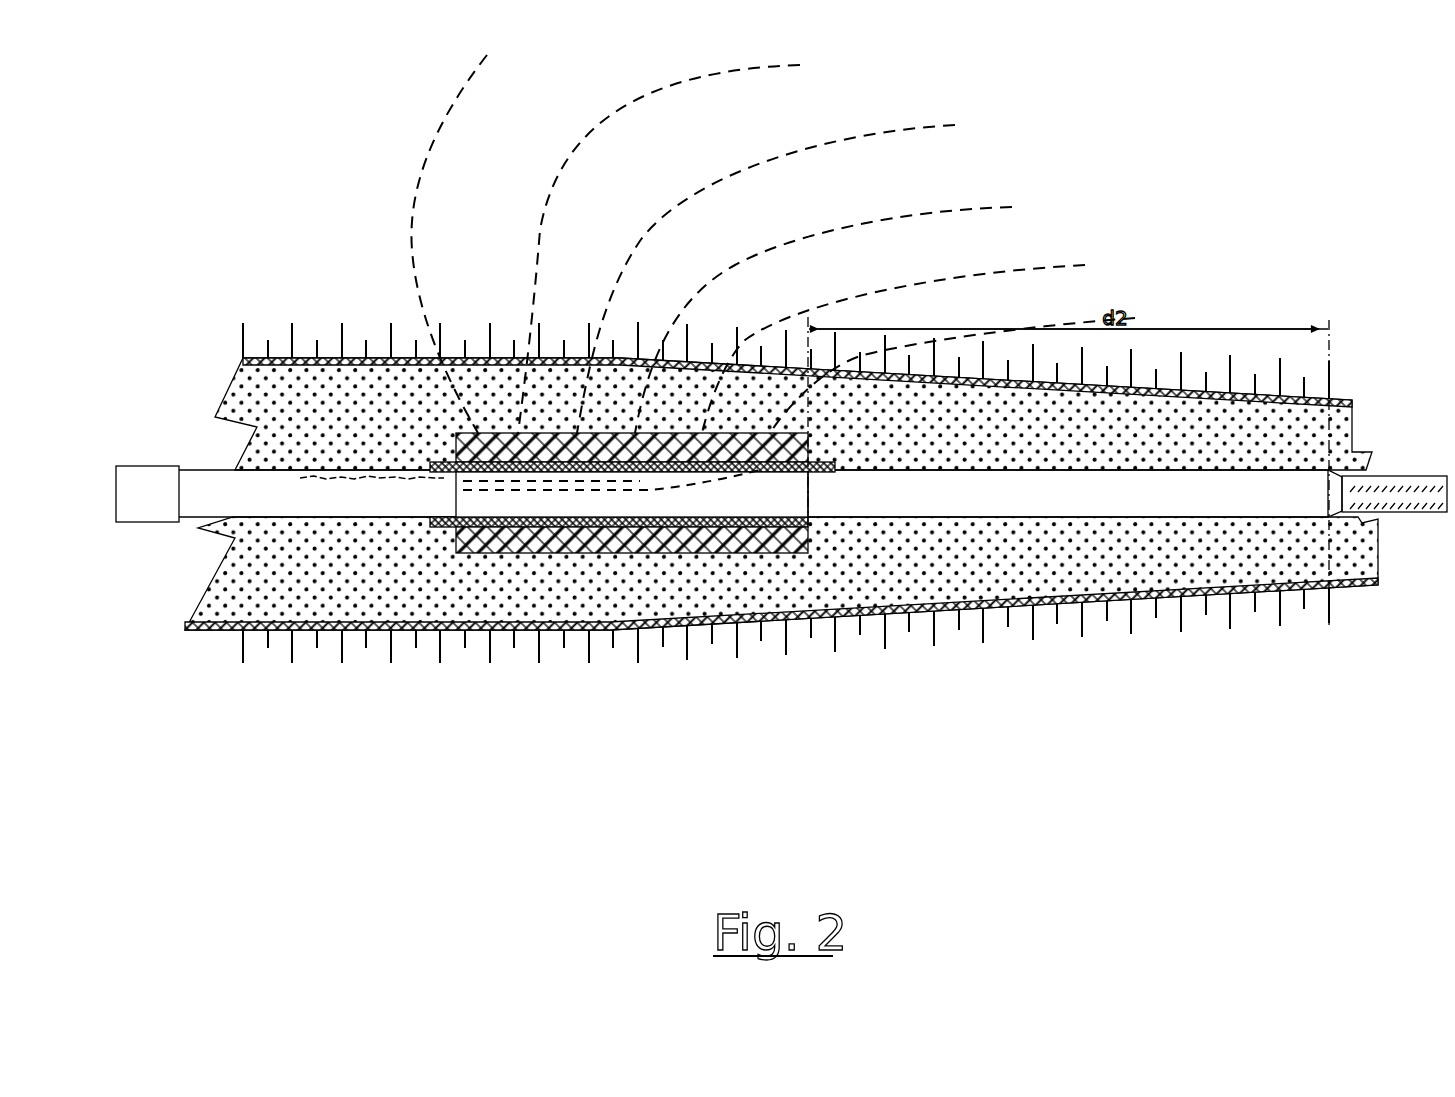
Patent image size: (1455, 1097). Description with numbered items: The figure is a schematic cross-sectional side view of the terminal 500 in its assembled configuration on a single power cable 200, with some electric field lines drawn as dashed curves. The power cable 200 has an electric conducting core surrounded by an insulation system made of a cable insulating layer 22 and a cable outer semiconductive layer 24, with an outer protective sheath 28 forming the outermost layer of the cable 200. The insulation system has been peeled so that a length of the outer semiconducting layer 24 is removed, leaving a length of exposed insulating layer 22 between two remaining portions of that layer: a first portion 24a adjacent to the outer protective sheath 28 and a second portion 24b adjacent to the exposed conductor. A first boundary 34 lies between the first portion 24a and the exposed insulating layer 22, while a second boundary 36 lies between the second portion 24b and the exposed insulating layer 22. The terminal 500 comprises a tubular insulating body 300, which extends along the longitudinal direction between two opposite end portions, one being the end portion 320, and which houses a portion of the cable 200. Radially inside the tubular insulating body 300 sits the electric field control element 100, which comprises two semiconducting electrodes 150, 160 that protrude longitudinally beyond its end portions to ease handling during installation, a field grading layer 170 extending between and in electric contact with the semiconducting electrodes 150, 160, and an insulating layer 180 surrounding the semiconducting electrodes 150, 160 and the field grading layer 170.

The terminal 500 is at (336, 220).
The tubular insulating body 300 is at (275, 317).
The end portion 320 is at (200, 427).
The power cable 200 is at (766, 470).
The outer protective sheath 28 is at (138, 510).
The cable outer semiconductive layer 24 is at (813, 685).
The first portion of the outer semiconducting layer 24a is at (327, 517).
The second portion of the outer semiconducting layer 24b is at (1085, 518).
The semiconducting electrode 150 is at (457, 507).
The first boundary 34 is at (460, 505).
The electric field control element 100 is at (756, 650).
The insulating layer 180 is at (631, 553).
The field grading layer 170 is at (675, 527).
The cable insulating layer 22 is at (705, 507).
The second boundary 36 is at (808, 497).
The semiconducting electrode 160 is at (818, 520).